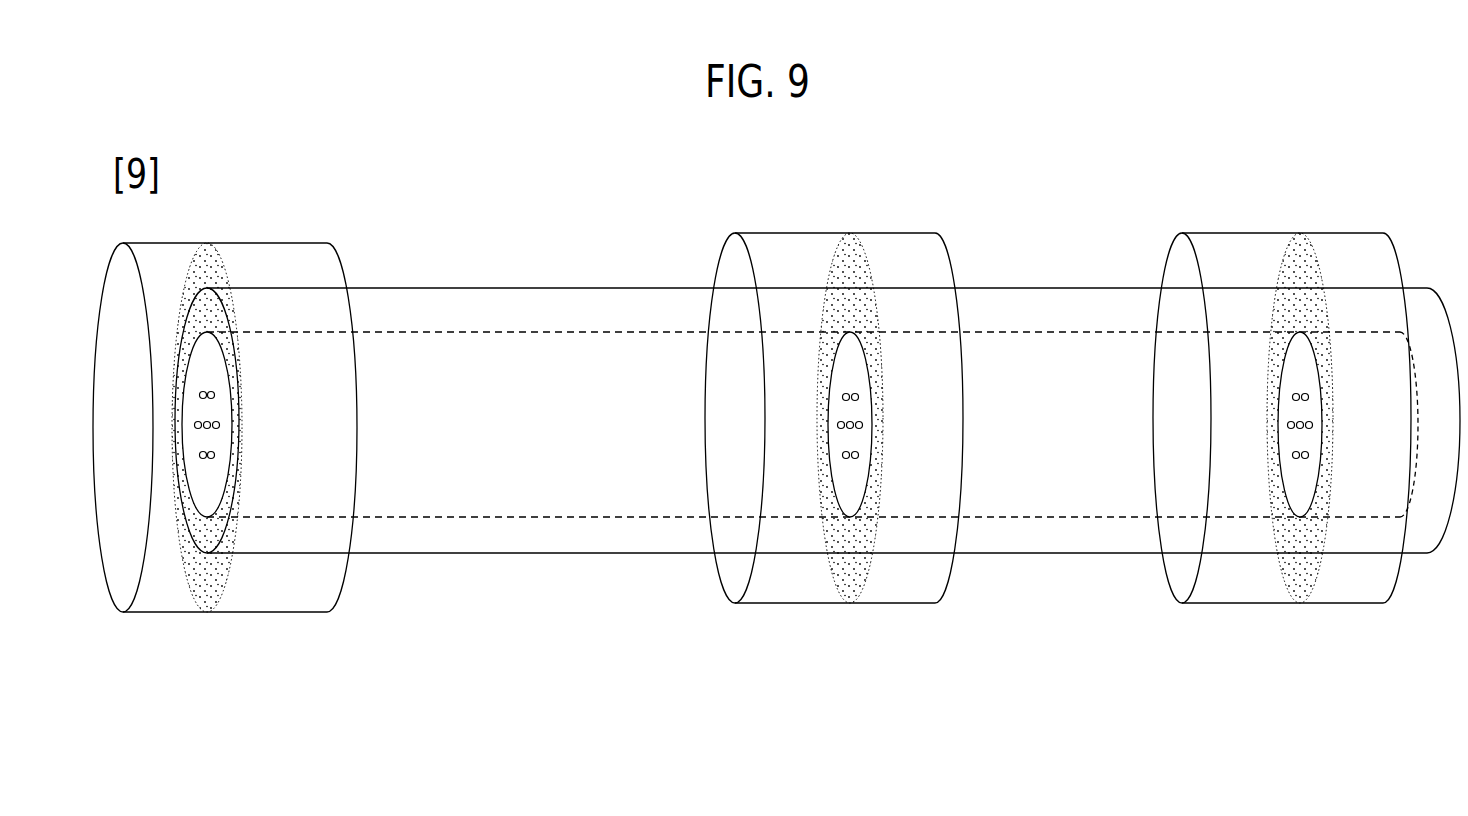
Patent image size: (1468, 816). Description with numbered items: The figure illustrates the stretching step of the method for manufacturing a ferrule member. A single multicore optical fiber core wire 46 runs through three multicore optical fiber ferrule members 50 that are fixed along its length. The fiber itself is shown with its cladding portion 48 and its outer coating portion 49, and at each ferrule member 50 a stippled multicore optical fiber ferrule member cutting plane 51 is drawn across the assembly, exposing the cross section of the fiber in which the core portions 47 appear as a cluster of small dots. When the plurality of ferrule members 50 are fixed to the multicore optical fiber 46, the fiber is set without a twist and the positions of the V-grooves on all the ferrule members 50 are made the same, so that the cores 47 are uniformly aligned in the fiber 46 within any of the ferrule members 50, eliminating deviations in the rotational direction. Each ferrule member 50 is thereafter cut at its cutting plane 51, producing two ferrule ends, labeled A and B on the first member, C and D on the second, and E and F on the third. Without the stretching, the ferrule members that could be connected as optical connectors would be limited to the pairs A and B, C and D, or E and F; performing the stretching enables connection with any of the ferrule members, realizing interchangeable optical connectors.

The multicore optical fiber core wire 46 is at (833, 477).
The core portion 47 is at (213, 395).
The cladding portion 48 is at (550, 497).
The coating portion 49 is at (457, 537).
The multicore optical fiber ferrule member 50 is at (157, 615).
The multicore optical fiber ferrule member cutting plane 51 is at (205, 612).
The ferrule member A is at (168, 242).
The ferrule member B is at (265, 242).
The ferrule member C is at (780, 233).
The ferrule member D is at (877, 233).
The ferrule member E is at (1238, 233).
The ferrule member F is at (1334, 233).